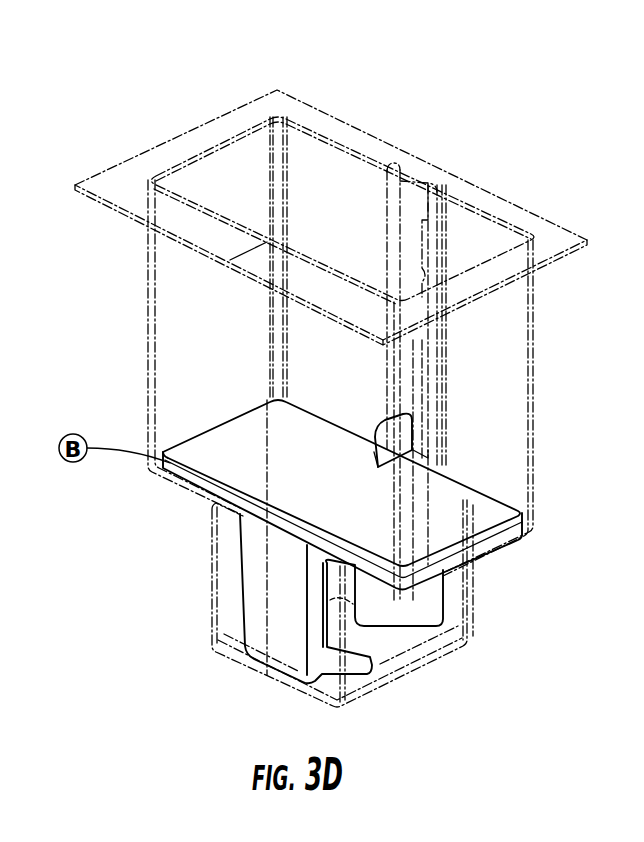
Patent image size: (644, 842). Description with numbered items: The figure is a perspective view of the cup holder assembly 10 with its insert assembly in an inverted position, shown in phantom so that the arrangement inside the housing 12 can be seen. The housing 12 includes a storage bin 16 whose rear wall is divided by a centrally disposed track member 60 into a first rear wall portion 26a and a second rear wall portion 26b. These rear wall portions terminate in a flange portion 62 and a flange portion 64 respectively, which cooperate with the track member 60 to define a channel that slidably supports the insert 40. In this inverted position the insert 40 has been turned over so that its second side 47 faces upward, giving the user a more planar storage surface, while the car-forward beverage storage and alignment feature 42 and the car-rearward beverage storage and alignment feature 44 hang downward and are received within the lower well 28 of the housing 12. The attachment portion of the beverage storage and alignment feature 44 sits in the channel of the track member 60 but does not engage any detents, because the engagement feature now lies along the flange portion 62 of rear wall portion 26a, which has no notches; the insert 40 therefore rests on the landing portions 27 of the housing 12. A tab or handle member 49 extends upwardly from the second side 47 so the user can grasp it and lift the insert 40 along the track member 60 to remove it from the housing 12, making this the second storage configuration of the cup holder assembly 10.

The cup holder assembly 10 is at (502, 120).
The housing 12 is at (565, 217).
The storage bin 16 is at (537, 368).
The first rear wall portion 26a is at (308, 365).
The second rear wall portion 26b is at (480, 363).
The landing portions 27 is at (180, 492).
The lower well 28 is at (212, 597).
The insert 40 is at (343, 559).
The car-forward beverage storage and alignment feature 42 is at (278, 640).
The car-rearward beverage storage and alignment feature 44 is at (402, 615).
The second side 47 is at (305, 480).
The handle member 49 is at (402, 433).
The track member 60 is at (440, 186).
The flange portion 62 is at (387, 197).
The flange portion 64 is at (427, 240).